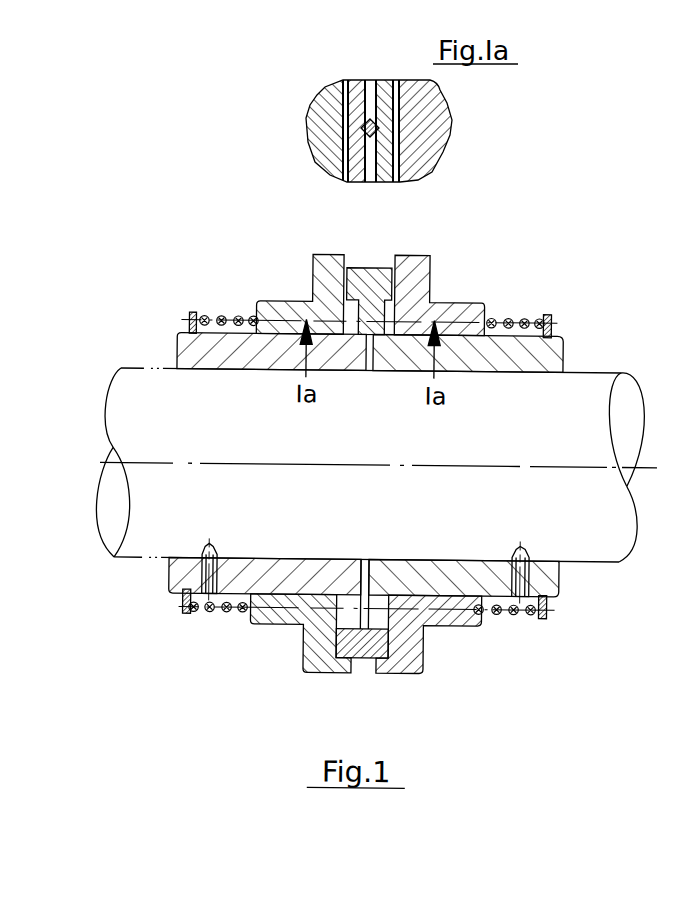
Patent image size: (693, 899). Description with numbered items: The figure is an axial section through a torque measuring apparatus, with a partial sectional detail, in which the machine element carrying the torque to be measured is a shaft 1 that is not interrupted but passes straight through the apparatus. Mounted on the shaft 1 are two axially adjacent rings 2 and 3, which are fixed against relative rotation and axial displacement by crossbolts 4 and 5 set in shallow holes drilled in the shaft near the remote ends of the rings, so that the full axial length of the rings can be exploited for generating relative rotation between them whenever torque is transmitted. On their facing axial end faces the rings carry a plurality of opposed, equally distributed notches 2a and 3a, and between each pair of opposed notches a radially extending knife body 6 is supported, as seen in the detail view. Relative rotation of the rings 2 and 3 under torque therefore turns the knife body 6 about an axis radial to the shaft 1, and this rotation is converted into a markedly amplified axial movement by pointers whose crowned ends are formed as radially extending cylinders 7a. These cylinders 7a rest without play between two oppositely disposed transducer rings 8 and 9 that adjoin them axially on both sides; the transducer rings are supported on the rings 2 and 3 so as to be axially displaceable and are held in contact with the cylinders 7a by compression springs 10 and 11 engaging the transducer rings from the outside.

In FIG. 1, the shaft 1 is at (133, 411).
In FIG. 1A, the ring 2 is at (355, 100).
In FIG. 1, the ring 2 is at (172, 335).
In FIG. 1A, the notch 2a is at (357, 143).
In FIG. 1A, the ring 3 is at (387, 100).
In FIG. 1, the ring 3 is at (525, 355).
In FIG. 1A, the notch 3a is at (387, 143).
In FIG. 1, the crossbolt 4 is at (176, 583).
In FIG. 1, the crossbolt 5 is at (560, 579).
In FIG. 1A, the knife body 6 is at (367, 118).
In FIG. 1, the knife body 6 is at (309, 298).
In FIG. 1, the cylinder 7a is at (398, 291).
In FIG. 1, the transducer ring 8 is at (307, 661).
In FIG. 1, the transducer ring 9 is at (407, 626).
In FIG. 1, the compression spring 10 is at (232, 615).
In FIG. 1, the compression spring 11 is at (503, 617).